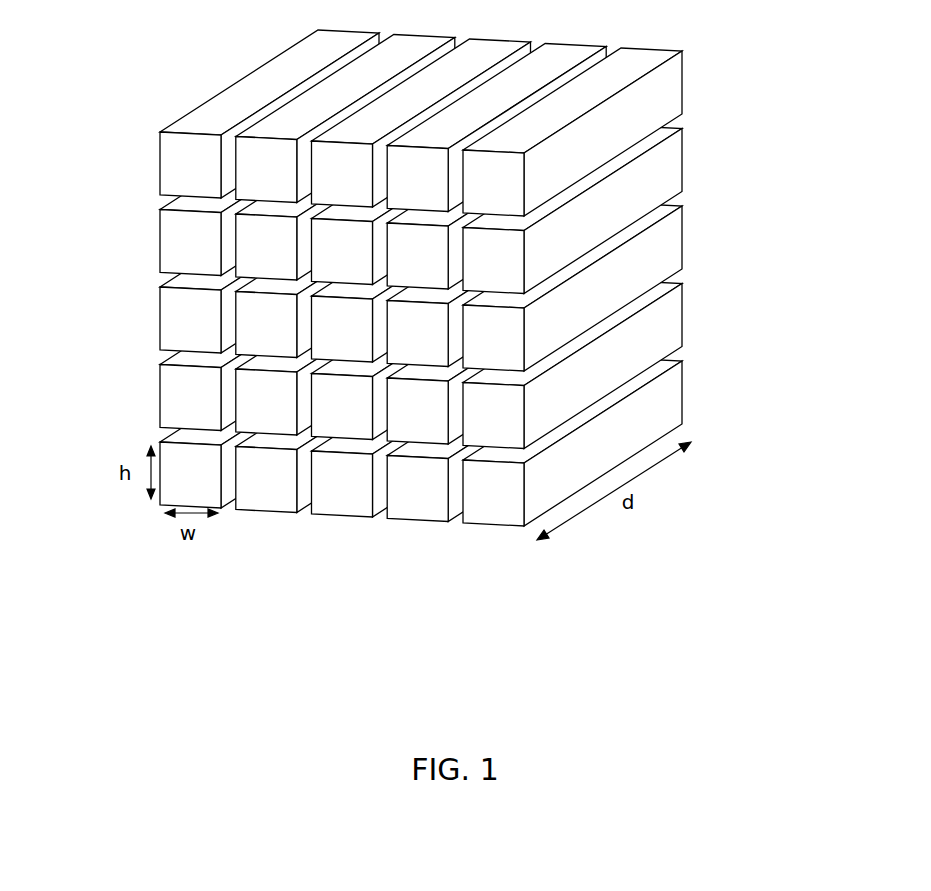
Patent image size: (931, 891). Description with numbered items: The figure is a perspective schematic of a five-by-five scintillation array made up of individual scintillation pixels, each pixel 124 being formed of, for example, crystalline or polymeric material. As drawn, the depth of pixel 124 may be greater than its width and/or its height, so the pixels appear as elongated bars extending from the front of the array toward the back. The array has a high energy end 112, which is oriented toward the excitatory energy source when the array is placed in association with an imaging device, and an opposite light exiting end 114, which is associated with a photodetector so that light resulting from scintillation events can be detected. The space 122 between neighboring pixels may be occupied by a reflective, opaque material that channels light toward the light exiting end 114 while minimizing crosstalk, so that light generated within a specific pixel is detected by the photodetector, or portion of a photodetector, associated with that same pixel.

The high energy end 112 is at (432, 318).
The light exiting end 114 is at (490, 318).
The space between pixels 122 is at (383, 490).
The pixel 124 is at (662, 410).